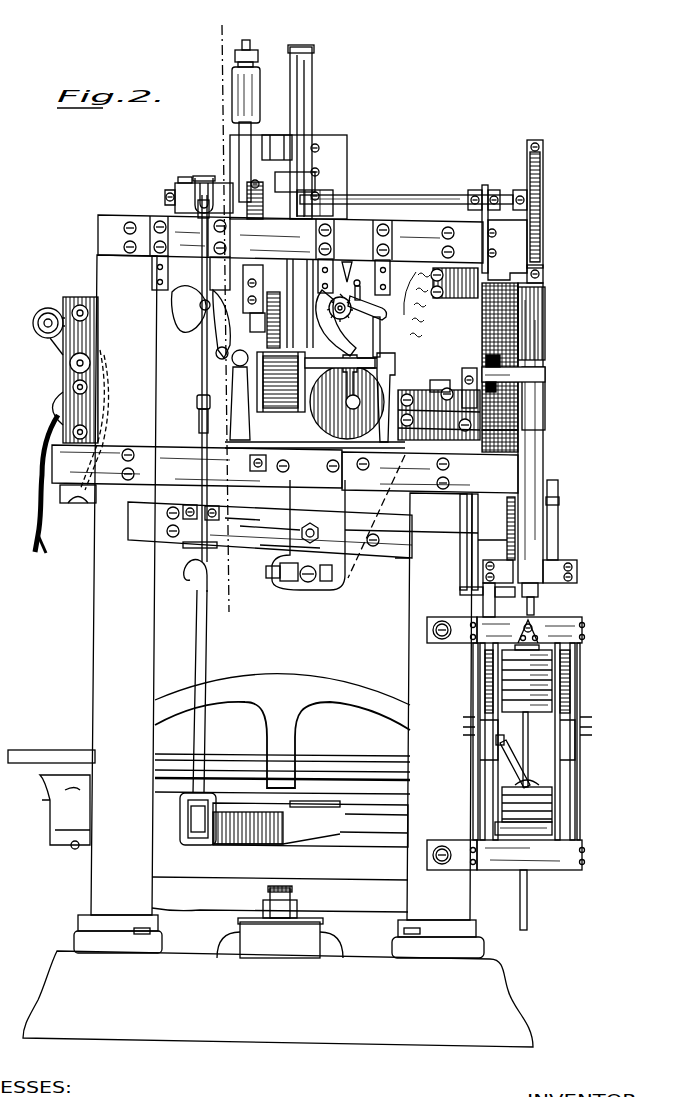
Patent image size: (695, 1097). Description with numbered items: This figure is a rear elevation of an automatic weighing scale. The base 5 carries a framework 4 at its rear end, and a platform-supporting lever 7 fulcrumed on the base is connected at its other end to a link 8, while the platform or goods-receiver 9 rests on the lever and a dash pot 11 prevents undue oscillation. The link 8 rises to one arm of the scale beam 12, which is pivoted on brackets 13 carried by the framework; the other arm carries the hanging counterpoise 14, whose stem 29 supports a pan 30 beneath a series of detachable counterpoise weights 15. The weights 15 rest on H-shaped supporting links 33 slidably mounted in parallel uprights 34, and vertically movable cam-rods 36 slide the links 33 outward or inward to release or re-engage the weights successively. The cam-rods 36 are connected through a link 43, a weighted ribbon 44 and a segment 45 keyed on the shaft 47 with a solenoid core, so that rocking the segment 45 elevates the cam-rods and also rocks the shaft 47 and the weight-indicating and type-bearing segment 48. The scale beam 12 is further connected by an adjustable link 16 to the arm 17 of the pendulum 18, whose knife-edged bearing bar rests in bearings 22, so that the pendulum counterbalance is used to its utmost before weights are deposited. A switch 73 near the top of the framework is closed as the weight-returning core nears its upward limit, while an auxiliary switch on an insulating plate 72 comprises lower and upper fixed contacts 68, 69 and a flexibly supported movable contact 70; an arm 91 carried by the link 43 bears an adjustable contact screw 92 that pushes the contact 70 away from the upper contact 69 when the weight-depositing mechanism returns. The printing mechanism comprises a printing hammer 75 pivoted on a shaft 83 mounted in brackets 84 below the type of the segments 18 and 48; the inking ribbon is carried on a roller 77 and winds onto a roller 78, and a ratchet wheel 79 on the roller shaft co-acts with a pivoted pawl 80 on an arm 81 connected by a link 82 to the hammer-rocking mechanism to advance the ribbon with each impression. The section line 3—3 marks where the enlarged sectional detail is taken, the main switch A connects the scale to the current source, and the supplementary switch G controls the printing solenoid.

The section line 3— 3 is at (172, 18).
The framework 4 is at (96, 867).
The base 5 is at (55, 972).
The platform-supporting lever 7 is at (230, 845).
The link 8 is at (208, 663).
The platform or goods-receiver 9 is at (32, 752).
The dash pot 11 is at (300, 925).
The scale beam 12 is at (375, 553).
The brackets 13 is at (287, 494).
The hanging counterpoise 14 is at (528, 750).
The detachable counterpoise weights 15 is at (548, 657).
The adjustable link 16 is at (200, 427).
The arm 17 is at (202, 180).
The pendulum 18 is at (244, 197).
The bearings 22 is at (185, 197).
The stem 29 is at (530, 763).
The pan 30 is at (548, 820).
The H-shaped supporting links 33 is at (583, 728).
The parallel uprights 34 is at (580, 695).
The cam-rods 36 is at (577, 600).
The link 43 is at (537, 530).
The weighted ribbon 44 is at (537, 260).
The segment 45 is at (543, 172).
The shaft 47 is at (400, 197).
The weight indicating and type-bearing segment 48 is at (300, 85).
The lower fixed contact 68 is at (452, 497).
The upper fixed contact 69 is at (457, 383).
The movable contact 70 is at (427, 390).
The insulating plate 72 is at (436, 380).
The switch 73 is at (447, 297).
The printing hammer 75 is at (272, 412).
The roller 77 is at (190, 328).
The roller 78 is at (341, 323).
The ratchet wheel 79 is at (321, 318).
The pivoted pawl 80 is at (358, 293).
The arm 81 is at (377, 307).
The link 82 is at (380, 335).
The shaft 83 is at (310, 405).
The brackets 84 is at (393, 348).
The arm 91 is at (532, 378).
The adjustable contact screw 92 is at (498, 370).
The main switch A is at (47, 407).
The supplementary switch G is at (35, 317).